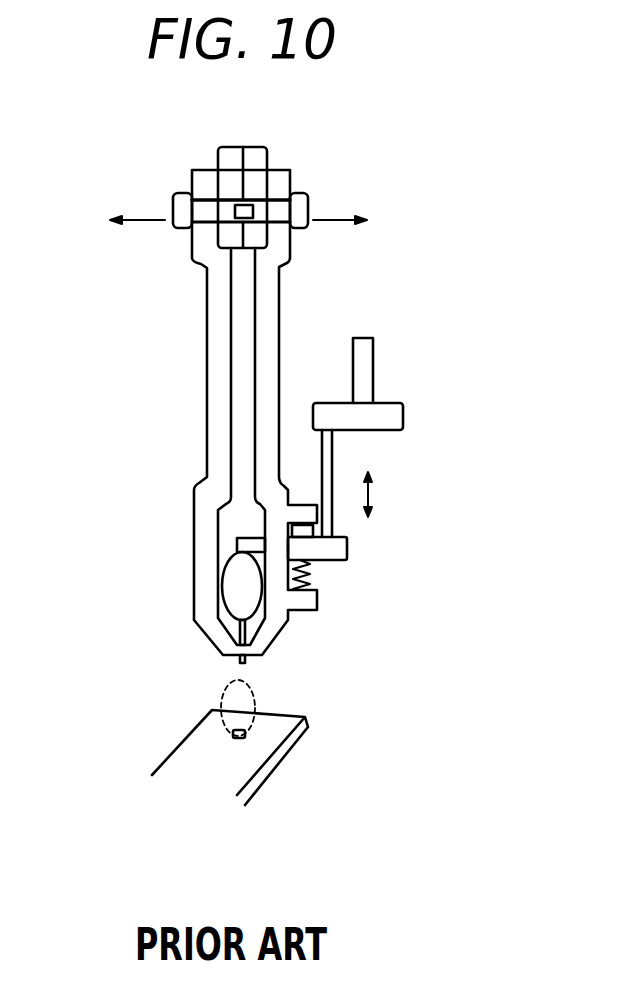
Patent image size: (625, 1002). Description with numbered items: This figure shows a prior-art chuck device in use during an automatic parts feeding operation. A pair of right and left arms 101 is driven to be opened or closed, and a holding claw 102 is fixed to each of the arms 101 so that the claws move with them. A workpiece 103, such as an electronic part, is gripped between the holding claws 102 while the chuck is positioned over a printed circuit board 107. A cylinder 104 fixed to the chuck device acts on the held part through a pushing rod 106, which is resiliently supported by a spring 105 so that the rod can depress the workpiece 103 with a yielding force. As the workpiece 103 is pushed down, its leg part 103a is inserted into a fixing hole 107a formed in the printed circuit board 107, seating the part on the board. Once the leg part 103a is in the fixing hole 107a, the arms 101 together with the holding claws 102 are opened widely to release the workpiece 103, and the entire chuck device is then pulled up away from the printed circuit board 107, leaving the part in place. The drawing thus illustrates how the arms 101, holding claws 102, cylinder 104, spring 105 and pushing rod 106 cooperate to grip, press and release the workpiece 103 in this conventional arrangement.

The arm 101 is at (333, 162).
The holding claw 102 is at (270, 330).
The workpiece 103 is at (237, 590).
The leg part 103a is at (245, 663).
The cylinder 104 is at (367, 370).
The spring 105 is at (313, 577).
The pushing rod 106 is at (348, 547).
The printed circuit board 107 is at (187, 755).
The fixing hole 107a is at (245, 728).